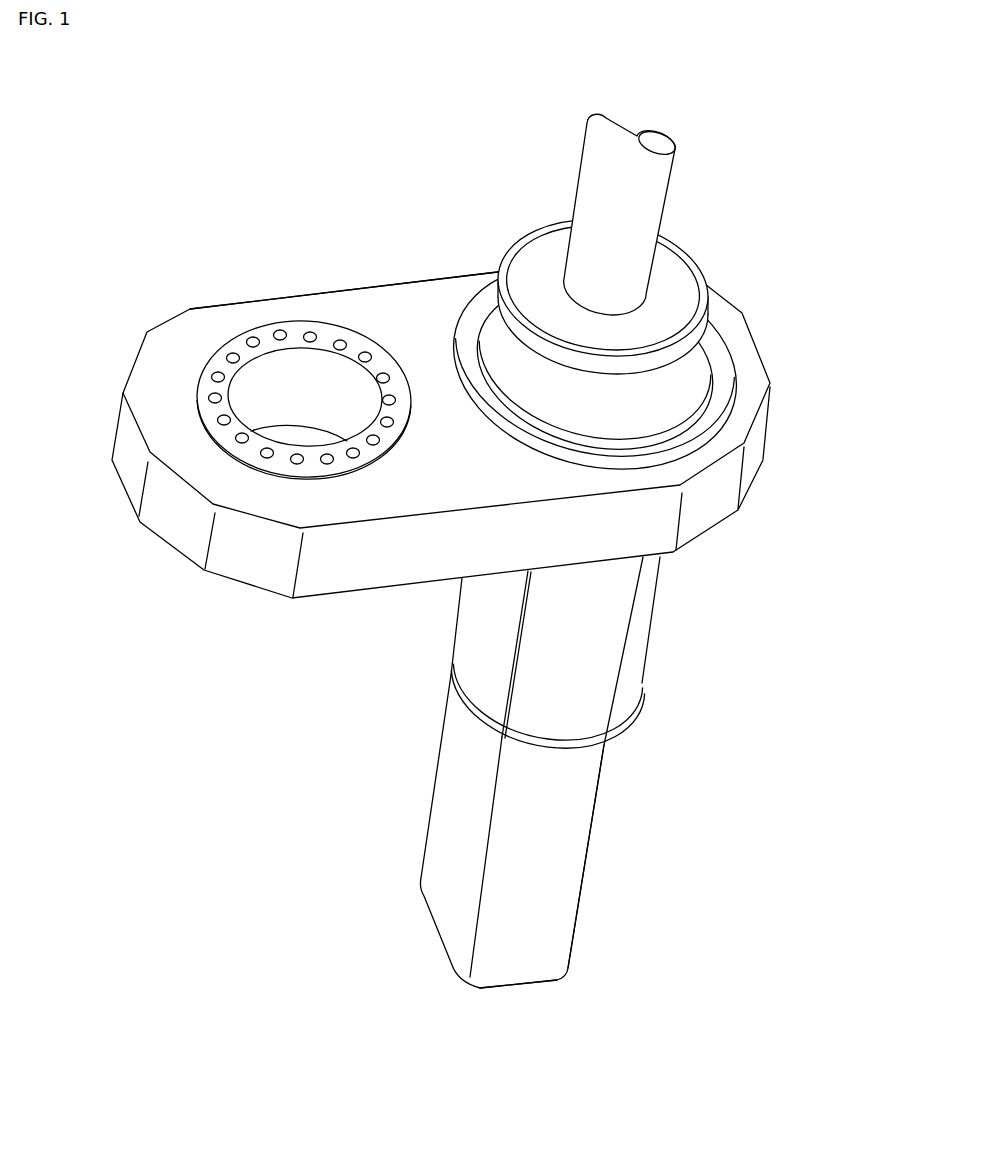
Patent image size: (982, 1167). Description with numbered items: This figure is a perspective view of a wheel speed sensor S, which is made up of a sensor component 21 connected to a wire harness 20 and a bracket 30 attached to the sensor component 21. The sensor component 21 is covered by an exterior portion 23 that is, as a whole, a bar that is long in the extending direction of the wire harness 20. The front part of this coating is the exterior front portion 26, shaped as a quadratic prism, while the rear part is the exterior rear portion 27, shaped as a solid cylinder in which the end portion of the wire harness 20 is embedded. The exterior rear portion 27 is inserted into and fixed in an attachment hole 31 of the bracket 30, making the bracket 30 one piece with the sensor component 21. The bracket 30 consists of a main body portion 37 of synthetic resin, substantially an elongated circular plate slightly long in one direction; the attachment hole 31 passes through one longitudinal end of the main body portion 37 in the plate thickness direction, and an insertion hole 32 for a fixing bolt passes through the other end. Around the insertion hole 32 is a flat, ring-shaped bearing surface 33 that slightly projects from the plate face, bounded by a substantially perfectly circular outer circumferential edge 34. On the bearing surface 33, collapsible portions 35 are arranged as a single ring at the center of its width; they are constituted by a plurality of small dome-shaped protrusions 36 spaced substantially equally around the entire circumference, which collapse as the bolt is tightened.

The wheel speed sensor S is at (326, 156).
The wire harness 20 is at (658, 184).
The sensor component 21 is at (440, 853).
The exterior portion 23 is at (473, 638).
The exterior front portion 26 is at (570, 872).
The exterior rear portion 27 is at (683, 278).
The bracket 30 is at (190, 312).
The attachment hole 31 is at (694, 404).
The insertion hole 32 is at (318, 368).
The bearing surface 33 is at (212, 413).
The outer circumferential edge 34 is at (198, 371).
The collapsible portions 35 is at (253, 336).
The protrusions 36 is at (365, 356).
The main body portion 37 is at (438, 280).